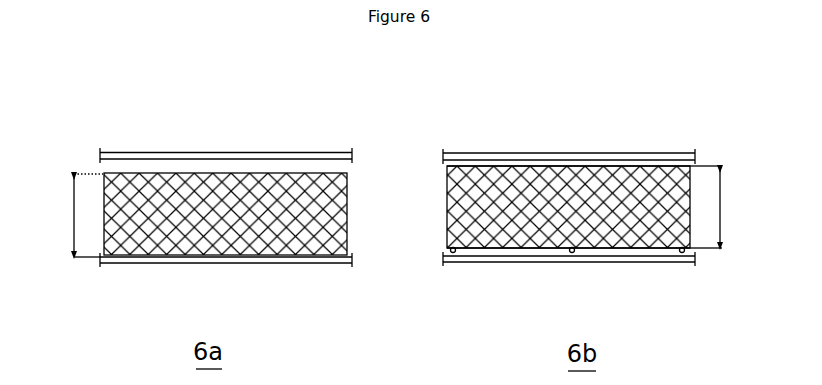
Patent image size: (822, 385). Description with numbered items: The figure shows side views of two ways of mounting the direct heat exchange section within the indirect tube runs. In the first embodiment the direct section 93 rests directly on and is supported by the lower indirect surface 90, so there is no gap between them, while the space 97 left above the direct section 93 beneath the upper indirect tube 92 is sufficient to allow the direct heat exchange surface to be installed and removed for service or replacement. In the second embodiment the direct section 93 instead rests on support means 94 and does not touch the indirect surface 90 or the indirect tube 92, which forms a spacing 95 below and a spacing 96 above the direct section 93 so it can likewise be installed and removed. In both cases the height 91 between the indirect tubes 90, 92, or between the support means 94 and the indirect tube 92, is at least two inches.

In FIG. 6a, the indirect surface 90 is at (153, 263).
In FIG. 6b, the indirect surface 90 is at (640, 262).
In FIG. 6a, the height 91 is at (74, 220).
In FIG. 6b, the height 91 is at (720, 207).
In FIG. 6a, the indirect tube 92 is at (155, 153).
In FIG. 6b, the indirect tube 92 is at (641, 155).
In FIG. 6a, the direct section 93 is at (283, 203).
In FIG. 6b, the direct section 93 is at (512, 204).
In FIG. 6b, the support means 94 is at (571, 253).
In FIG. 6b, the spacing 95 is at (599, 250).
In FIG. 6b, the spacing 96 is at (582, 165).
In FIG. 6a, the space 97 is at (215, 168).